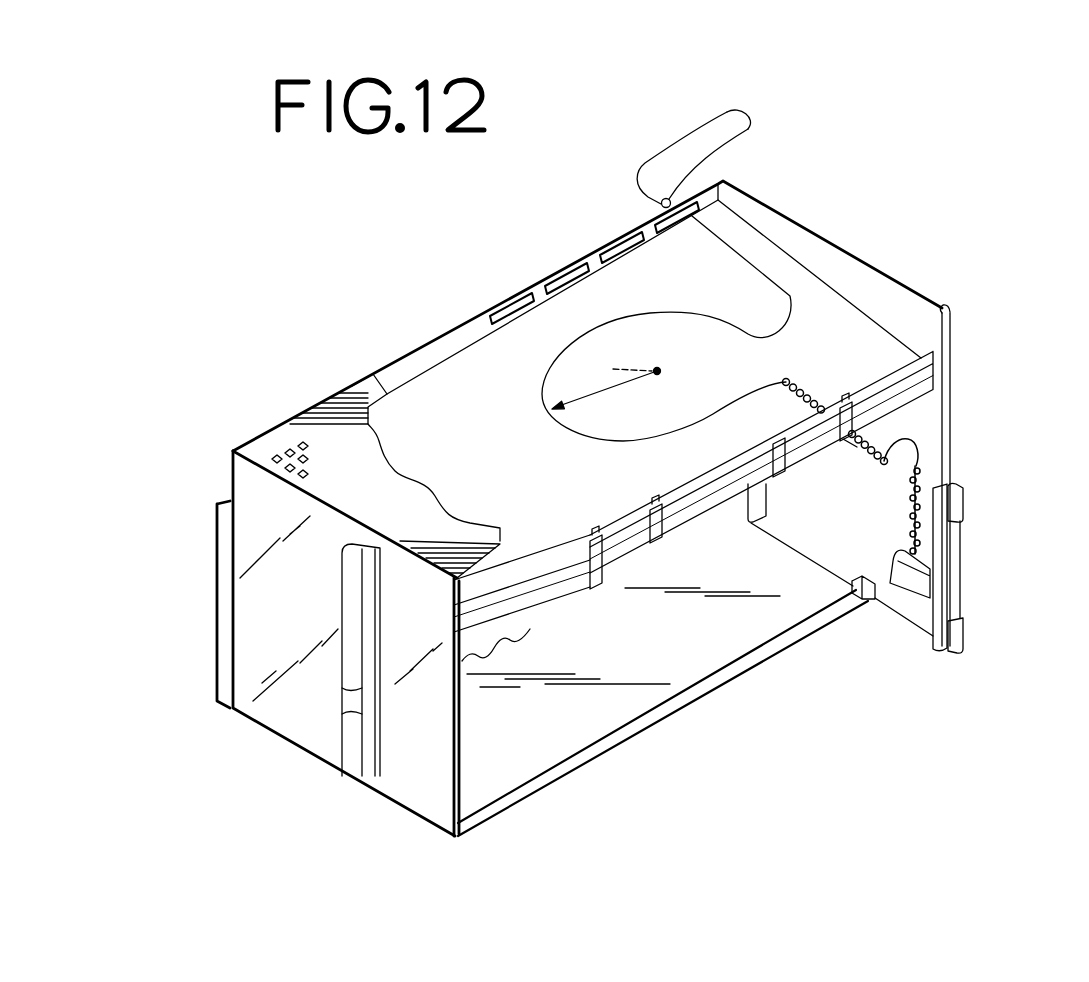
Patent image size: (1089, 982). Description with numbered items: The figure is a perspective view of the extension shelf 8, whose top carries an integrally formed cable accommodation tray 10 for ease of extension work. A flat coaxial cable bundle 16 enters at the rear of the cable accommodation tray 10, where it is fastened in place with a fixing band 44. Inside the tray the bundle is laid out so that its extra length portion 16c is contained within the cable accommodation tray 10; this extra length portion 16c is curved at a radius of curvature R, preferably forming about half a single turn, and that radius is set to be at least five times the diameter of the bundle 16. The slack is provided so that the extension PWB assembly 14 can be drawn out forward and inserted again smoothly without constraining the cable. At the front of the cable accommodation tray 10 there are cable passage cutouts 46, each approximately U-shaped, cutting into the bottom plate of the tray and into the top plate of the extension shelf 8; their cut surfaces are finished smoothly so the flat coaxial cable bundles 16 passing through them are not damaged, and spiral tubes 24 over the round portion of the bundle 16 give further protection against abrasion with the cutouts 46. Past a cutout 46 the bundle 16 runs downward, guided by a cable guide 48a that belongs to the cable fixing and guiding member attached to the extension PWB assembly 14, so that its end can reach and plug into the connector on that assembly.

The flat coaxial cable bundle 16 is at (719, 104).
The extra length portion 16c is at (562, 418).
The cable accommodation tray 10 is at (605, 286).
The fixing band 44 is at (662, 191).
The extension shelf 8 is at (254, 480).
The spiral tube 24 is at (798, 379).
The cable passage cutout 46 is at (835, 400).
The cable guide 48a is at (934, 480).
The extension PWB assembly 14 is at (940, 586).